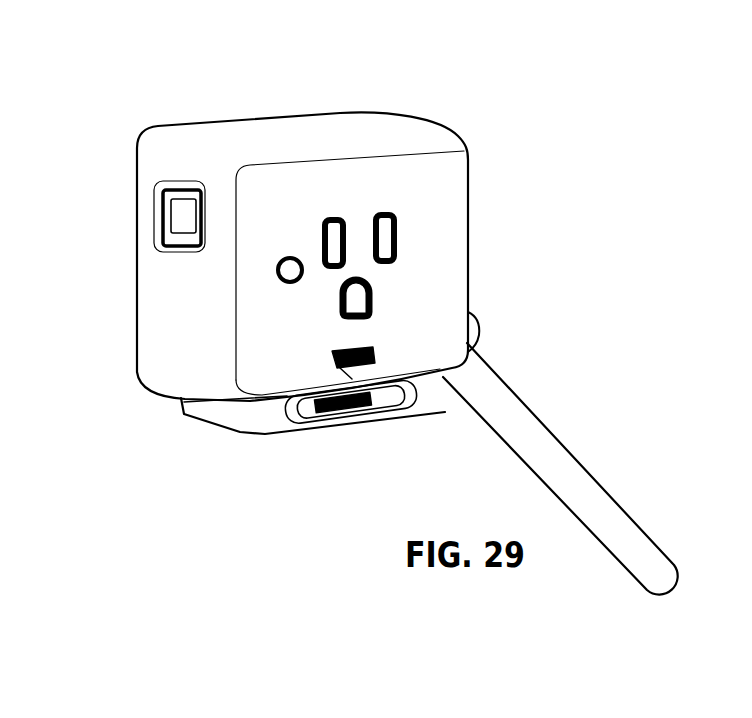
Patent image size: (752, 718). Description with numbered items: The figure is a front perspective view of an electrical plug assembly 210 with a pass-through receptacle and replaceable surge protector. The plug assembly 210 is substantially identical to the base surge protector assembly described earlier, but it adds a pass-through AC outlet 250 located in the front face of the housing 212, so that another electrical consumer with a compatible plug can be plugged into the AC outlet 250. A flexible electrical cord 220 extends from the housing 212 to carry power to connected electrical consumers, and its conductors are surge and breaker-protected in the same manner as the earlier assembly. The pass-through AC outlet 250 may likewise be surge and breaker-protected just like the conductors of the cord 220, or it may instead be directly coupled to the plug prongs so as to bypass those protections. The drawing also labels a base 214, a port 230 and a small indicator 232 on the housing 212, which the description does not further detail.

The electrical plug assembly 210 is at (488, 101).
The housing 212 is at (290, 125).
The base 214 is at (257, 432).
The electrical cord 220 is at (563, 452).
The USB port 230 is at (182, 208).
The indicator light 232 is at (286, 288).
The pass-through AC outlet 250 is at (424, 262).